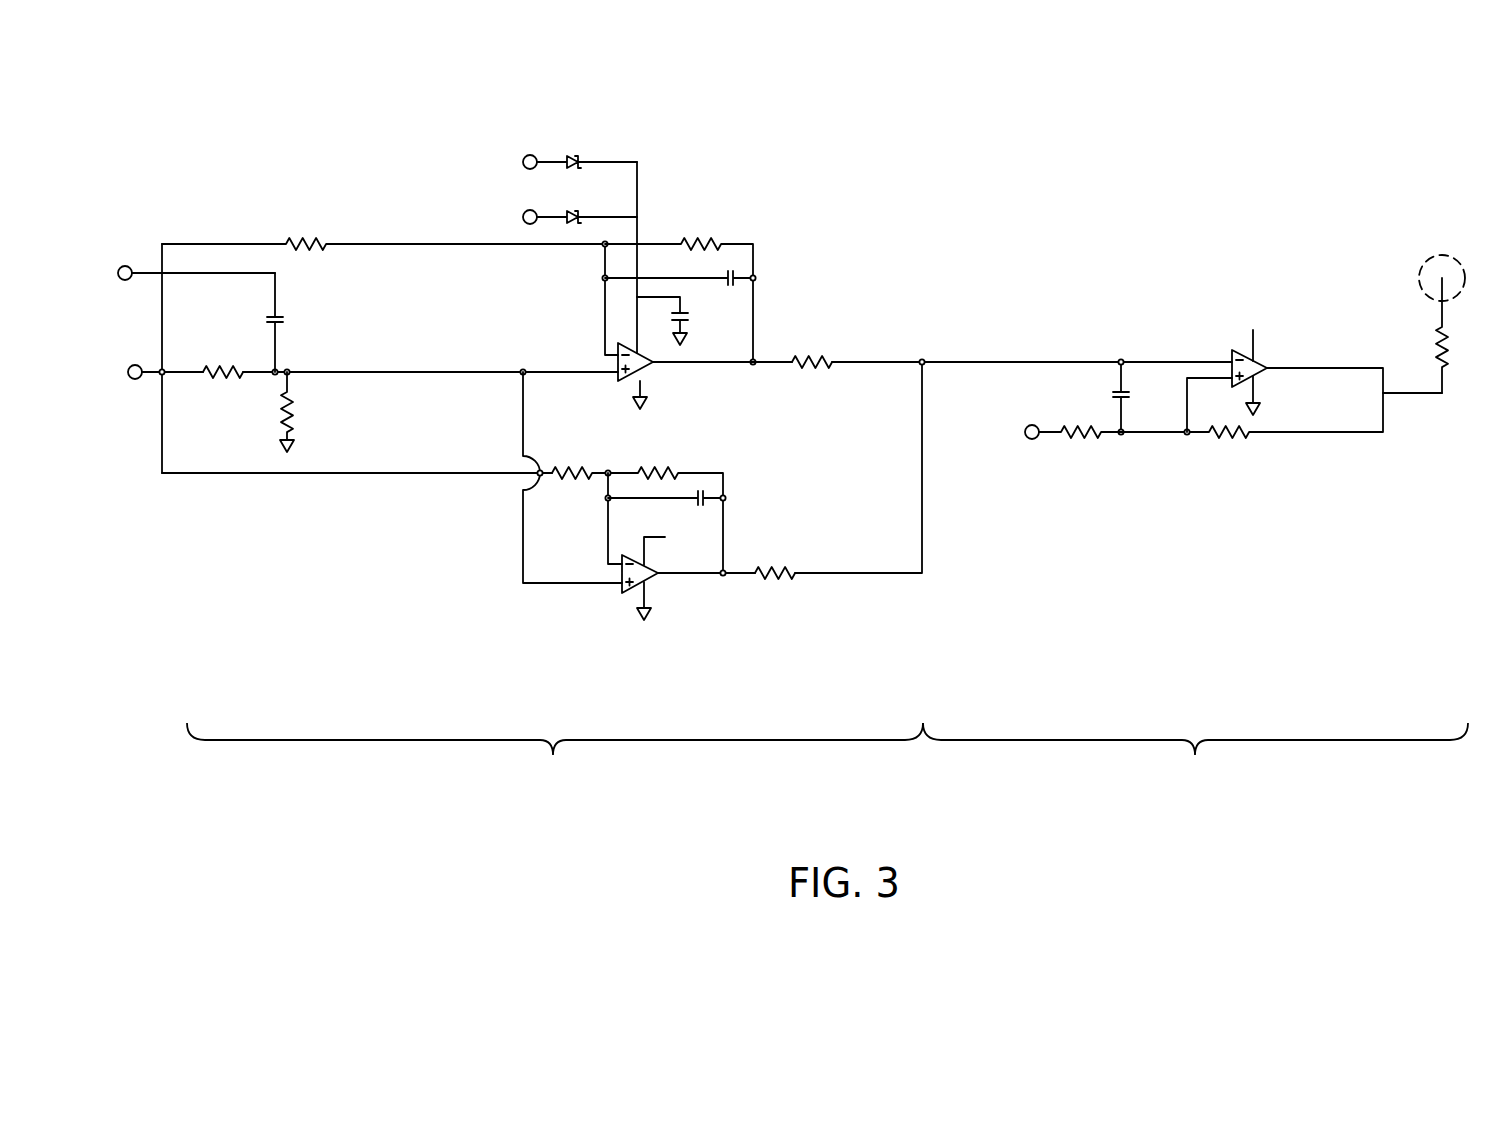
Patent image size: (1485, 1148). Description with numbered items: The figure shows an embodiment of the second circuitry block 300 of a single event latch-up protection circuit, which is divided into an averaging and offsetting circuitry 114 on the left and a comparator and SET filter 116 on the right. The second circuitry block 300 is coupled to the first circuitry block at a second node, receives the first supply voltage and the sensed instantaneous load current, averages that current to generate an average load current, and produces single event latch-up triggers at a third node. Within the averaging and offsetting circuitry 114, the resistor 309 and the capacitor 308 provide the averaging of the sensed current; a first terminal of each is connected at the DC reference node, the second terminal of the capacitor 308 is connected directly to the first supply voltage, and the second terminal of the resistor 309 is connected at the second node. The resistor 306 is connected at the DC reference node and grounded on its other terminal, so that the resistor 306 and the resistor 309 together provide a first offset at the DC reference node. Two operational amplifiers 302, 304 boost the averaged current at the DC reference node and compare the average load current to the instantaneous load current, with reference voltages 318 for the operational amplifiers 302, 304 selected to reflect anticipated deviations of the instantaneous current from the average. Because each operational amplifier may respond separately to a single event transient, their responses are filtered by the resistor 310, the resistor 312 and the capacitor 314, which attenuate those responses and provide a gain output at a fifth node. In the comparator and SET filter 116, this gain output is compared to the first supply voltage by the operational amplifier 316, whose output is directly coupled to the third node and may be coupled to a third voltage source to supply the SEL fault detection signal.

The second circuitry block 300 is at (1142, 182).
The operational amplifier 302 is at (618, 362).
The operational amplifier 304 is at (650, 575).
The resistor 306 is at (293, 405).
The capacitor 308 is at (288, 320).
The resistor 309 is at (215, 383).
The resistor 310 is at (822, 360).
The resistor 312 is at (794, 573).
The capacitor 314 is at (1113, 394).
The operational amplifier 316 is at (1258, 366).
The reference voltages 318 is at (613, 162).
The averaging and offsetting circuitry 114 is at (555, 769).
The comparator and SET filter 116 is at (1195, 769).